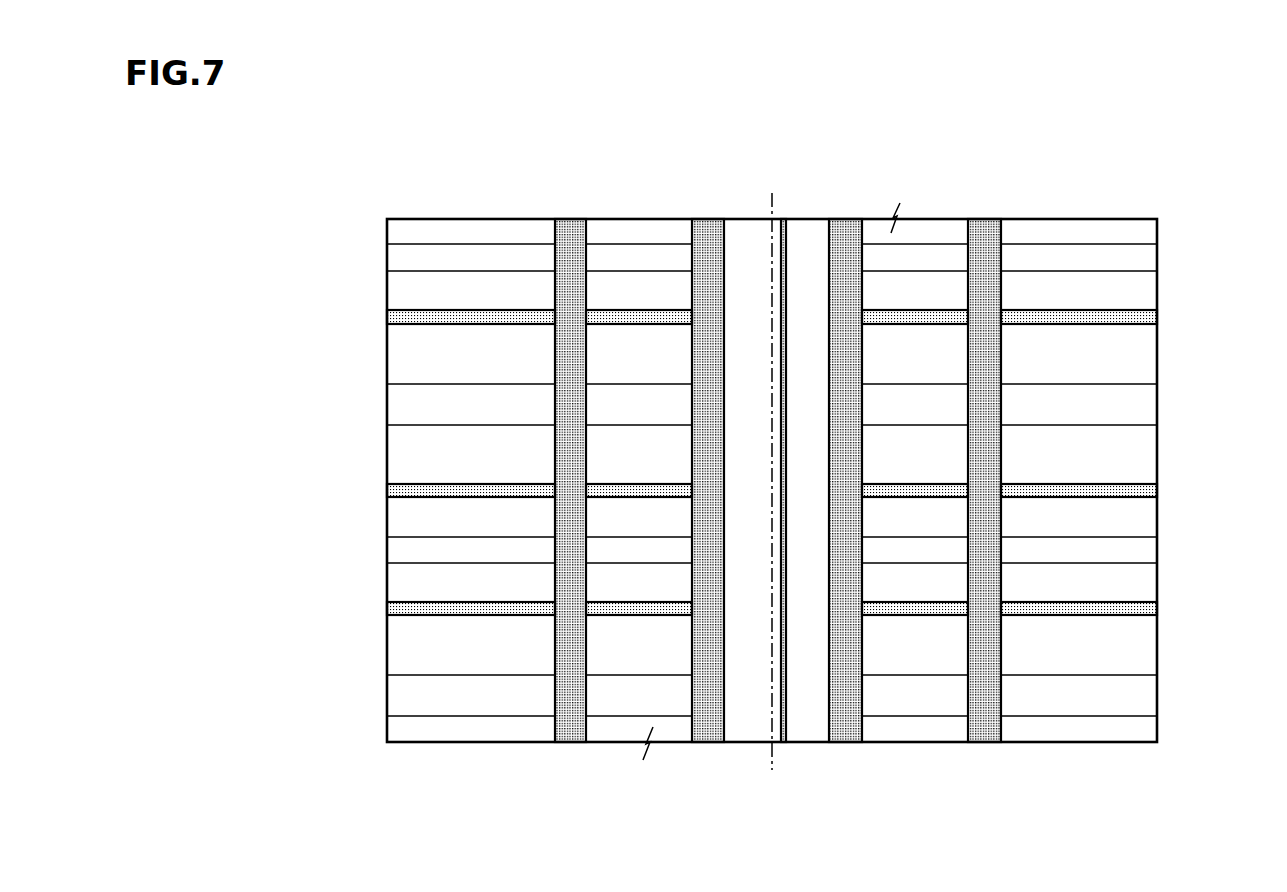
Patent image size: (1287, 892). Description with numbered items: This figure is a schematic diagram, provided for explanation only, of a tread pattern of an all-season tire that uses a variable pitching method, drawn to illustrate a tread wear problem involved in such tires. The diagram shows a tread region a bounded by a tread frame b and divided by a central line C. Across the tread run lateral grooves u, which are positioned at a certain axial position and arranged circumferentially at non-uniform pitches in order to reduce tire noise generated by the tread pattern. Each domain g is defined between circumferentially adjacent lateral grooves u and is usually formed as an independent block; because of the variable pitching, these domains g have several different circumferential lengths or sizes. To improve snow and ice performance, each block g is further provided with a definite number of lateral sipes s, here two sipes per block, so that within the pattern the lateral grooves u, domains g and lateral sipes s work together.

The grid assembly a is at (1161, 176).
The frame b is at (1083, 216).
The center line C is at (770, 470).
The lateral groove u is at (510, 322).
The lateral sipe s is at (450, 385).
The domain g is at (416, 410).